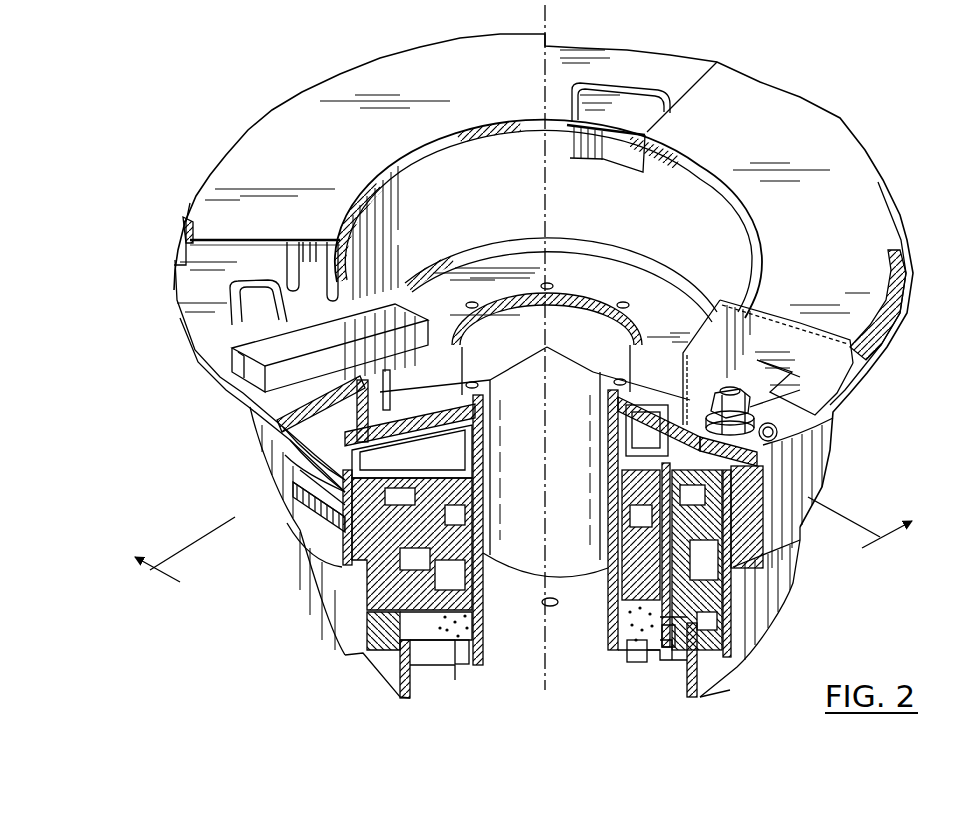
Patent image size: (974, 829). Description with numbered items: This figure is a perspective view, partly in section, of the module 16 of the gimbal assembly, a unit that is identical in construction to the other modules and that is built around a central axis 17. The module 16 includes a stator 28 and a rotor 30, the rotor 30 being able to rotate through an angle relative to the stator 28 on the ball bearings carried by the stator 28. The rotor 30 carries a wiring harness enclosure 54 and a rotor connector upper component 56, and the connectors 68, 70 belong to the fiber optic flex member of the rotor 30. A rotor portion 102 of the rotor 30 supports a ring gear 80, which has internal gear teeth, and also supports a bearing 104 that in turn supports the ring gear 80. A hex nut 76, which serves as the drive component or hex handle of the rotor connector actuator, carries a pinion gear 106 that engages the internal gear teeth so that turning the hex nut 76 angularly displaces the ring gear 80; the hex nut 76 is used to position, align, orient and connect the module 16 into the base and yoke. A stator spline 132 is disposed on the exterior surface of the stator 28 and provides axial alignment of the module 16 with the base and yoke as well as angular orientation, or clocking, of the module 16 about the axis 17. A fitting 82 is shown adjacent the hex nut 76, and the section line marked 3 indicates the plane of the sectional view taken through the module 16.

The module 16 is at (840, 105).
The wiring harness enclosure 54 is at (332, 302).
The rotor portion 102 is at (383, 322).
The pinion gear 106 is at (688, 412).
The hex nut 76 is at (787, 367).
The adjusting fitting 82 is at (773, 443).
The rotor connector upper component 56 is at (263, 443).
The ring gear 80 is at (278, 457).
The stator spline 132 is at (300, 468).
The bearing 104 is at (300, 483).
The rotor 30 is at (482, 483).
The stator 28 is at (337, 620).
The axis 17 is at (541, 600).
The connector 68 is at (464, 652).
The connector 70 is at (628, 652).
The section line 3- 3 is at (516, 539).